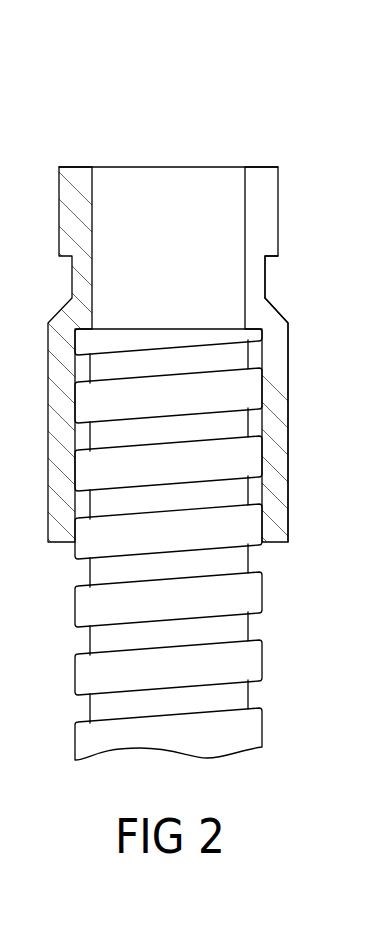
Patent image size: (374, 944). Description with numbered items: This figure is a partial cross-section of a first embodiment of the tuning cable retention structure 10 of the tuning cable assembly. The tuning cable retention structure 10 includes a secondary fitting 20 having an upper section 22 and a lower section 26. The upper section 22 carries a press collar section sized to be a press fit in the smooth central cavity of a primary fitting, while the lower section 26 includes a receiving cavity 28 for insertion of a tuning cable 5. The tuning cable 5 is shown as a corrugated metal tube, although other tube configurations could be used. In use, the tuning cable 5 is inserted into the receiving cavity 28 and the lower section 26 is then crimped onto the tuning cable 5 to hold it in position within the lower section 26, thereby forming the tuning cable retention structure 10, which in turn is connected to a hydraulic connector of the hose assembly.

The tuning cable retention structure 10 is at (210, 141).
The secondary fitting 20 is at (77, 167).
The upper section 22 is at (260, 276).
The lower section 26 is at (281, 338).
The receiving cavity 28 is at (253, 420).
The tuning cable 5 is at (250, 593).